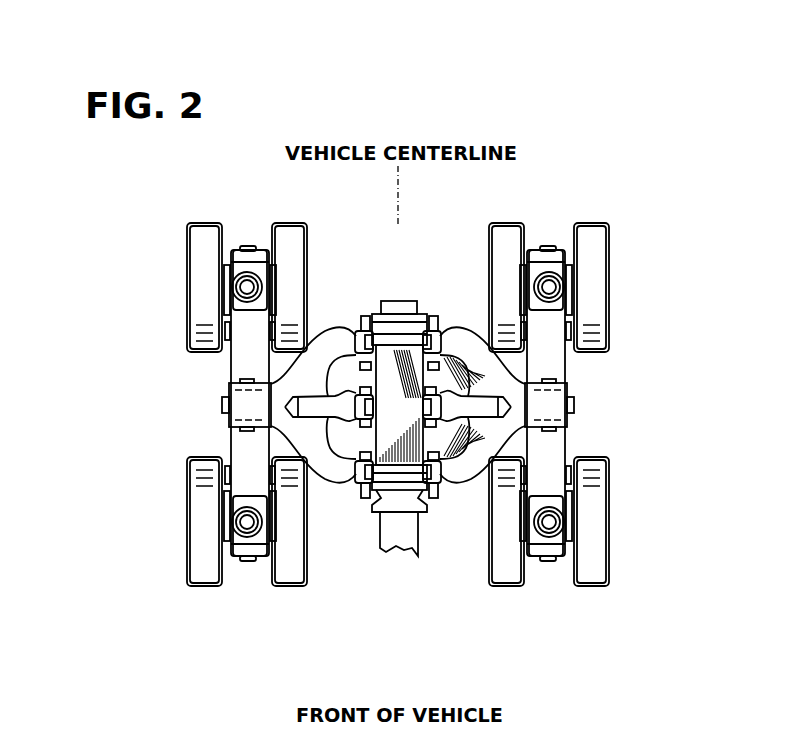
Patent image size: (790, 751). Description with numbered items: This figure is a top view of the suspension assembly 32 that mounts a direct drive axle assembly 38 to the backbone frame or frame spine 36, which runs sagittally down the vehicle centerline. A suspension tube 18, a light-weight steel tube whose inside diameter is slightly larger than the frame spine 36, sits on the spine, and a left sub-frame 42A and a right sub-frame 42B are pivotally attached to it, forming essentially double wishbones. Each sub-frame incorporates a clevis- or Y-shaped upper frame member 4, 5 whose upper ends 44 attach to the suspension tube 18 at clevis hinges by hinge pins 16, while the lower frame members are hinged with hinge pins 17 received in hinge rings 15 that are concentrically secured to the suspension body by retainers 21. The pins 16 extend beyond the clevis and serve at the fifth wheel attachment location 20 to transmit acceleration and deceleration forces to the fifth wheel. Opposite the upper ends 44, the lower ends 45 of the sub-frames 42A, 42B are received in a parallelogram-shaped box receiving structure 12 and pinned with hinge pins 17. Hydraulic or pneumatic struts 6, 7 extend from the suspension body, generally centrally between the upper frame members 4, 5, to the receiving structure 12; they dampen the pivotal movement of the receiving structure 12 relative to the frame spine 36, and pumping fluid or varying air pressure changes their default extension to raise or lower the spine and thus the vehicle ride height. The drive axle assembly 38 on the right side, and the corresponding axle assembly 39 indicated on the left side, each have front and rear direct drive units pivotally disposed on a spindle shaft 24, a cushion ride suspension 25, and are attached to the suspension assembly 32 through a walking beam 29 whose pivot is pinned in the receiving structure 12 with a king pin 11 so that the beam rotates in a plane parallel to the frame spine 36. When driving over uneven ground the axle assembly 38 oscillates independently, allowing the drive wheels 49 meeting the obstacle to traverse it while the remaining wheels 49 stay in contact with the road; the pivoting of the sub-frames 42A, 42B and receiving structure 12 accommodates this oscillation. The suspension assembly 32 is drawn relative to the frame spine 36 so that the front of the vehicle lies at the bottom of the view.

The upper frame member 4 is at (342, 338).
The upper frame member 5 is at (462, 458).
The extensible strut 6 is at (499, 404).
The extensible strut 7 is at (335, 408).
The king pin 11 is at (216, 403).
The receiving structure 12 is at (228, 385).
The hinge ring 15 is at (415, 342).
The hinge pin 16 is at (366, 357).
The hinge pin 17 is at (248, 433).
The suspension tube 18 is at (428, 367).
The fifth wheel attachment location 20 is at (361, 328).
The retainer 21 is at (379, 305).
The spindle shaft 24 is at (248, 248).
The cushion ride suspension 25 is at (250, 300).
The walking beam 29 is at (234, 441).
The suspension assembly 32 is at (124, 302).
The frame spine 36 is at (401, 300).
The direct drive axle assembly 38 is at (591, 438).
The suspension assembly 39 is at (175, 461).
The left sub-frame 42A is at (355, 688).
The right sub-frame 42B is at (454, 254).
The upper end 44 is at (442, 345).
The lower end 45 is at (229, 417).
The drive wheel 49 is at (190, 250).